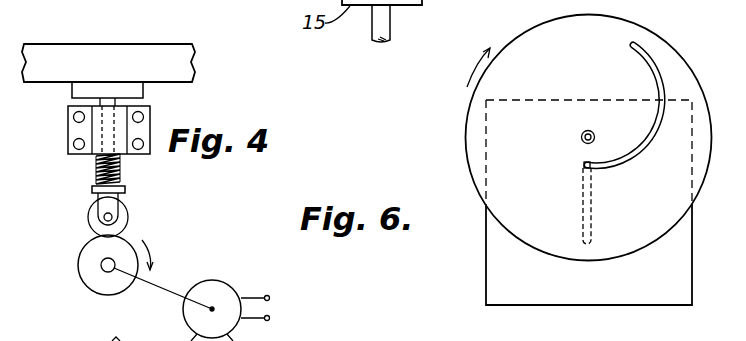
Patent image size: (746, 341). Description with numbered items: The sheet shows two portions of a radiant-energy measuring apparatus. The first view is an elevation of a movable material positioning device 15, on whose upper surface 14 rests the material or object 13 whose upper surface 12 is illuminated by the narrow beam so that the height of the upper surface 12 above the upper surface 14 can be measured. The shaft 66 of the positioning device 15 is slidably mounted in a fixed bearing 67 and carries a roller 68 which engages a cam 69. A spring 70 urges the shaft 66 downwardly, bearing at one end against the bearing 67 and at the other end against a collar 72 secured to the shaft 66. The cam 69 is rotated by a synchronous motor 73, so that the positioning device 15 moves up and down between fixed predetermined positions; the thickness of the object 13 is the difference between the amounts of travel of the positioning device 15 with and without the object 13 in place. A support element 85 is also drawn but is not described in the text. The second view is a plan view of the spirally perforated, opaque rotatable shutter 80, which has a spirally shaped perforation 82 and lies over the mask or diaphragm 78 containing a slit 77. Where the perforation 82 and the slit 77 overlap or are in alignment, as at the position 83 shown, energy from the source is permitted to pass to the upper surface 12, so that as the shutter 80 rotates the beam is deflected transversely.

In FIG. 4, the upper surface 12 is at (86, 44).
In FIG. 4, the material or object 13 is at (132, 53).
In FIG. 4, the upper surface of positioning device 14 is at (122, 81).
In FIG. 4, the positioning device 15 is at (134, 90).
In FIG. 4, the shaft 66 is at (99, 101).
In FIG. 4, the fixed bearing 67 is at (68, 130).
In FIG. 4, the spring 70 is at (95, 172).
In FIG. 4, the collar 72 is at (92, 190).
In FIG. 4, the roller 68 is at (90, 222).
In FIG. 4, the cam 69 is at (90, 257).
In FIG. 4, the synchronous motor 73 is at (208, 282).
In FIG. 4, the support 85 is at (136, 330).
In FIG. 6, the rotatable shutter 80 is at (465, 142).
In FIG. 6, the spirally shaped perforation 82 is at (643, 143).
In FIG. 6, the overlap position 83 is at (583, 166).
In FIG. 6, the slit 77 is at (592, 210).
In FIG. 6, the mask or diaphragm 78 is at (678, 250).